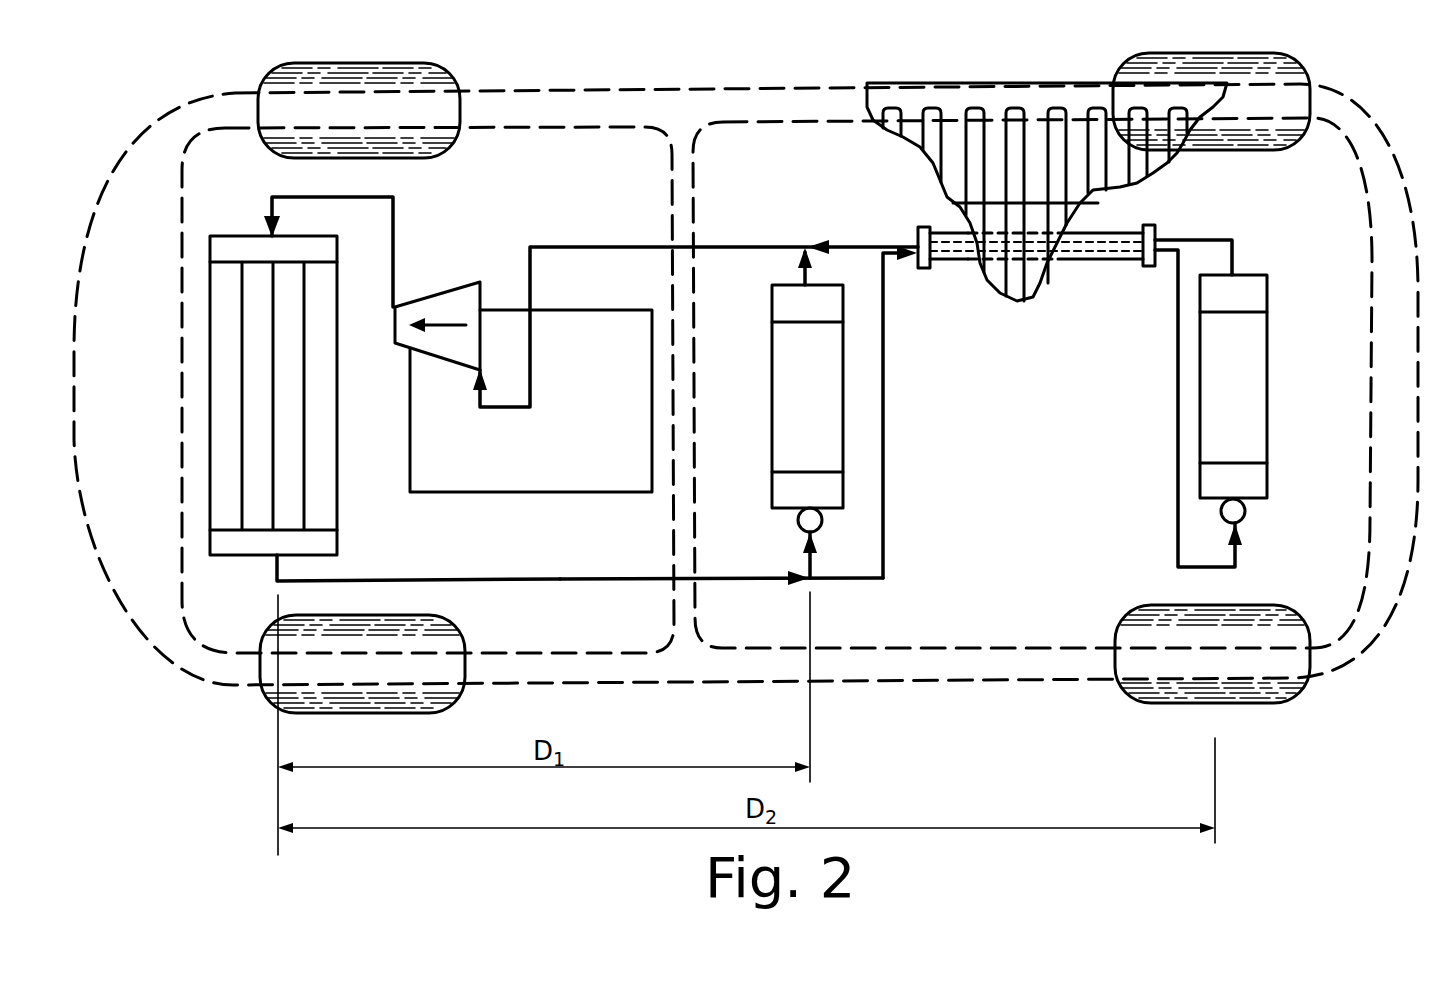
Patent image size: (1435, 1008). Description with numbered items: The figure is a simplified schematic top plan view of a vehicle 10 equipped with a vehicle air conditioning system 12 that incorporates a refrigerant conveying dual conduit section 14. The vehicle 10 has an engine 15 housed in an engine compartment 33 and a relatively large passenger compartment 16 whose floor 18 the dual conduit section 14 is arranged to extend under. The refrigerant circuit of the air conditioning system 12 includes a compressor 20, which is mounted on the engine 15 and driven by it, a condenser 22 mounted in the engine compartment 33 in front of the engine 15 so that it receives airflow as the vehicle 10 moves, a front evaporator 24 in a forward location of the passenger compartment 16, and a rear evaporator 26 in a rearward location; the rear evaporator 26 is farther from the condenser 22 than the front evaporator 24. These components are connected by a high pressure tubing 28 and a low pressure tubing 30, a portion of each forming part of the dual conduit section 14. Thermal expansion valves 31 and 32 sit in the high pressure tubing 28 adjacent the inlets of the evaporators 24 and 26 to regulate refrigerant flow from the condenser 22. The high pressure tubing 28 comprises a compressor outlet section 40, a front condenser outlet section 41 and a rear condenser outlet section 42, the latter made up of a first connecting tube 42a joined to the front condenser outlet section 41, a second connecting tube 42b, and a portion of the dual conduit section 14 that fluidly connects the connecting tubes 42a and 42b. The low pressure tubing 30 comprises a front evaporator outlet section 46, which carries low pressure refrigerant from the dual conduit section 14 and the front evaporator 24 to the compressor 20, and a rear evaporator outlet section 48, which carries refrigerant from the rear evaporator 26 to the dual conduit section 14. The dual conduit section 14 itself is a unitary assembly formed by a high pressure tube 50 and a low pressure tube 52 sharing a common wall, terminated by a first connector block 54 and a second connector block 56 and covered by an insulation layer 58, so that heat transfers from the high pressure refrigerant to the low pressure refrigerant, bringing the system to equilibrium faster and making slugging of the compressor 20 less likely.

The vehicle 10 is at (597, 74).
The vehicle air conditioning system 12 is at (523, 356).
The dual conduit section 14 is at (1108, 278).
The engine 15 is at (580, 463).
The passenger compartment 16 is at (798, 102).
The floor 18 is at (993, 105).
The compressor 20 is at (446, 305).
The condenser 22 is at (225, 358).
The front evaporator 24 is at (787, 437).
The rear evaporator 26 is at (1247, 367).
The high pressure tubing 28 is at (507, 598).
The low pressure tubing 30 is at (721, 271).
The thermal expansion valve 31 is at (800, 521).
The thermal expansion valve 32 is at (1245, 513).
The engine compartment 33 is at (497, 108).
The compressor outlet section 40 is at (302, 196).
The front condenser outlet section 41 is at (391, 580).
The rear condenser outlet section 42 is at (1062, 412).
The first connecting tube 42a is at (884, 433).
The second connecting tube 42b is at (1157, 408).
The front evaporator outlet section 46 is at (727, 246).
The rear evaporator outlet section 48 is at (919, 219).
The high pressure tube 50 is at (1075, 262).
The low pressure tube 52 is at (960, 250).
The first connector block 54 is at (1147, 268).
The second connector block 56 is at (926, 270).
The insulation layer 58 is at (960, 270).